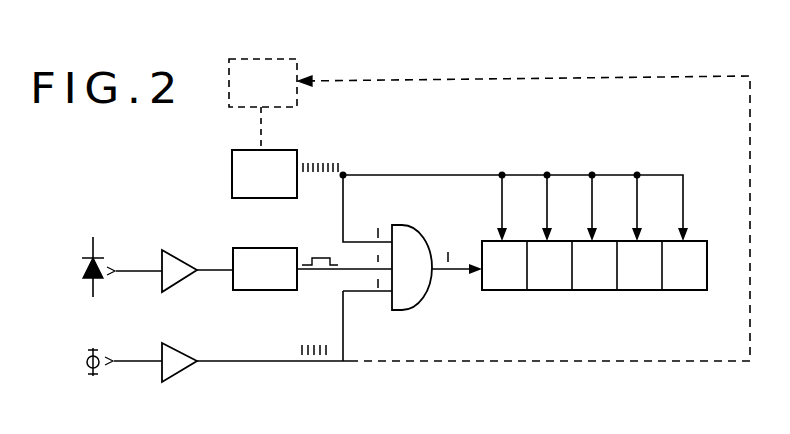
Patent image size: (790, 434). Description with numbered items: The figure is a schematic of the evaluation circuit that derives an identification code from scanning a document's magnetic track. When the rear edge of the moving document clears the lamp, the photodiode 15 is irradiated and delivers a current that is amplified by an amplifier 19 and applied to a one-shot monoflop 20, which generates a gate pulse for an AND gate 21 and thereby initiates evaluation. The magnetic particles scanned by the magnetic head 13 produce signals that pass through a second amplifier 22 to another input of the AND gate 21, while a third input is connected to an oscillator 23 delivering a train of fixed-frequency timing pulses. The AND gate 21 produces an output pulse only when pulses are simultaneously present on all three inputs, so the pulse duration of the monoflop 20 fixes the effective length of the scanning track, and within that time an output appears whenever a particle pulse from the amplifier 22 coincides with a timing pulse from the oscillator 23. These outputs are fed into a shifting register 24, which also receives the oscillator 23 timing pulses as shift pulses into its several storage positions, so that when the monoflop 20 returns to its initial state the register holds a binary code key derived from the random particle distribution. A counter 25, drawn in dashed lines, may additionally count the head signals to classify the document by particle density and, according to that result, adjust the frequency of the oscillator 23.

The magnetic head 13 is at (96, 378).
The photodiode 15 is at (93, 256).
The amplifier 19 is at (177, 262).
The monoflop 20 is at (258, 291).
The AND gate 21 is at (414, 300).
The amplifier 22 is at (177, 373).
The oscillator 23 is at (232, 177).
The shifting register 24 is at (686, 284).
The counter 25 is at (279, 58).